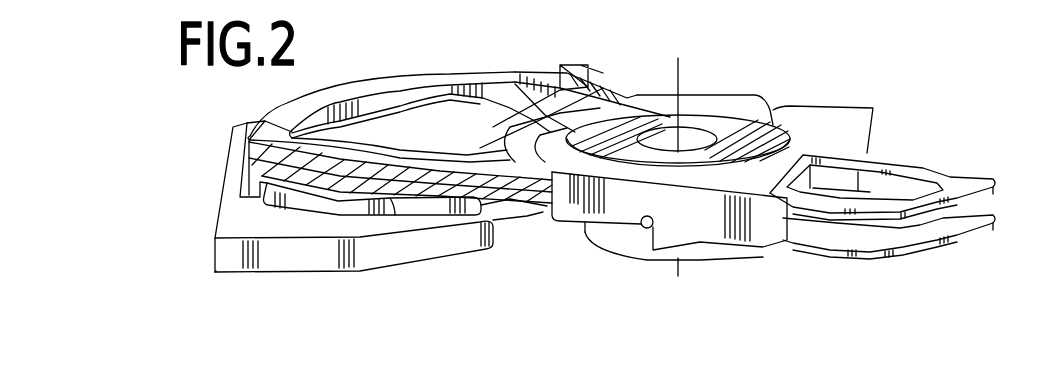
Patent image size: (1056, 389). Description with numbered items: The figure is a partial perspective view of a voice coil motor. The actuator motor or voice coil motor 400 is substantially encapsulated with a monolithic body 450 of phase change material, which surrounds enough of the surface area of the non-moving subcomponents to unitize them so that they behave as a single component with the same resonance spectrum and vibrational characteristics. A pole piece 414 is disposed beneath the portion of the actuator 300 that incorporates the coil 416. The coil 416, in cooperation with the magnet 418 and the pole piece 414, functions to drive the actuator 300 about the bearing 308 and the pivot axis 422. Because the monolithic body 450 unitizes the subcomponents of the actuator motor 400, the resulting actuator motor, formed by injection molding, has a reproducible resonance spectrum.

The actuator 300 is at (624, 263).
The bearing 308 is at (760, 115).
The actuator motor or voice coil motor 400 is at (372, 290).
The pole piece 414 is at (447, 240).
The coil 416 is at (361, 108).
The magnet 418 is at (378, 212).
The pivot axis 422 is at (683, 85).
The monolithic body 450 is at (293, 167).